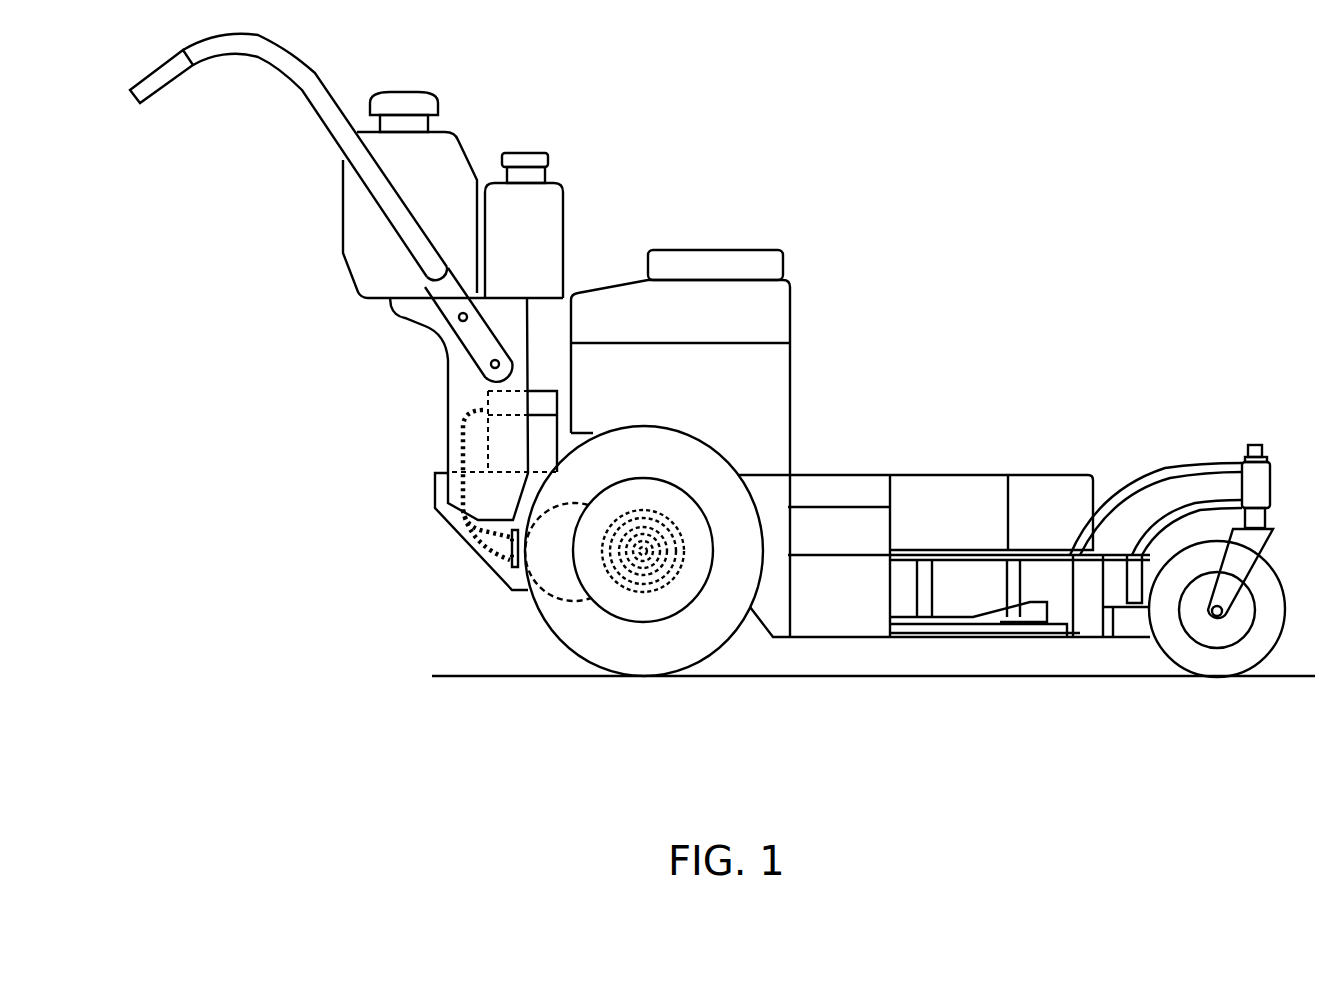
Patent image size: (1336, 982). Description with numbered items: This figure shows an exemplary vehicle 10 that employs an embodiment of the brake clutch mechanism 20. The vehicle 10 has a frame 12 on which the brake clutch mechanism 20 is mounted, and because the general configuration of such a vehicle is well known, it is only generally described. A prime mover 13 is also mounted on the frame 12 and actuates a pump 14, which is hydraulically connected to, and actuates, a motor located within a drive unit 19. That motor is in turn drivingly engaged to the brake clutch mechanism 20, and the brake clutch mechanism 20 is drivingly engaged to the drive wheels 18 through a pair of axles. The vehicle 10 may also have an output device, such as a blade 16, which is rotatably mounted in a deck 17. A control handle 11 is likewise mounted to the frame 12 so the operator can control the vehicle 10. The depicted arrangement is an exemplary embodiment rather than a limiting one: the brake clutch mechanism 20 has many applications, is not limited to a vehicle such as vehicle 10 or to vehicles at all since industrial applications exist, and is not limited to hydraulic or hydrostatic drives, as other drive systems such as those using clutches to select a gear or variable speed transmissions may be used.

The vehicle 10 is at (984, 141).
The control handle 11 is at (292, 95).
The frame 12 is at (433, 490).
The prime mover 13 is at (663, 399).
The pump 14 is at (488, 443).
The blade 16 is at (1020, 627).
The deck 17 is at (830, 612).
The drive wheels 18 is at (723, 564).
The drive unit 19 is at (558, 598).
The brake clutch mechanism 20 is at (667, 567).